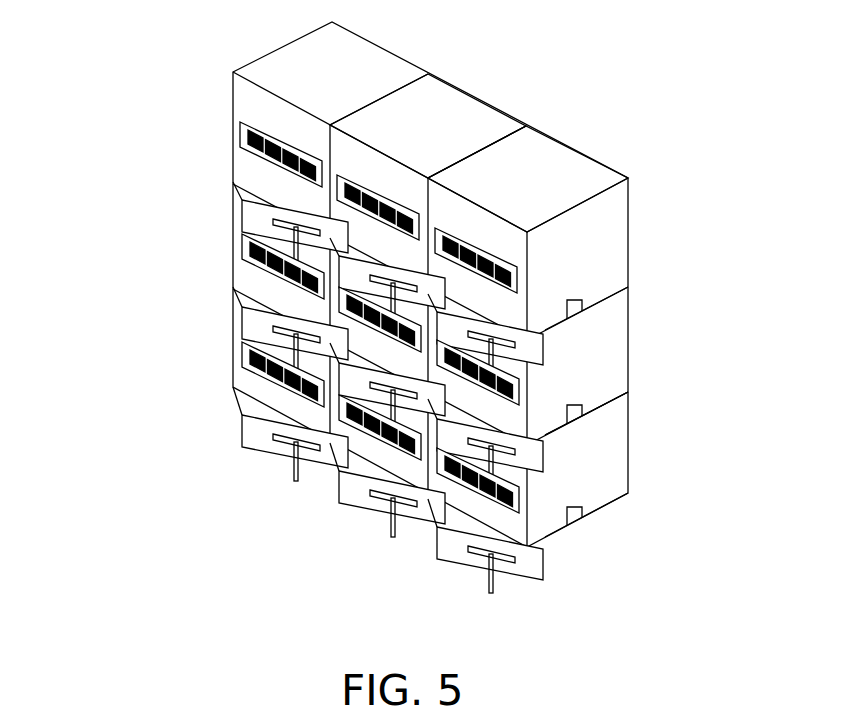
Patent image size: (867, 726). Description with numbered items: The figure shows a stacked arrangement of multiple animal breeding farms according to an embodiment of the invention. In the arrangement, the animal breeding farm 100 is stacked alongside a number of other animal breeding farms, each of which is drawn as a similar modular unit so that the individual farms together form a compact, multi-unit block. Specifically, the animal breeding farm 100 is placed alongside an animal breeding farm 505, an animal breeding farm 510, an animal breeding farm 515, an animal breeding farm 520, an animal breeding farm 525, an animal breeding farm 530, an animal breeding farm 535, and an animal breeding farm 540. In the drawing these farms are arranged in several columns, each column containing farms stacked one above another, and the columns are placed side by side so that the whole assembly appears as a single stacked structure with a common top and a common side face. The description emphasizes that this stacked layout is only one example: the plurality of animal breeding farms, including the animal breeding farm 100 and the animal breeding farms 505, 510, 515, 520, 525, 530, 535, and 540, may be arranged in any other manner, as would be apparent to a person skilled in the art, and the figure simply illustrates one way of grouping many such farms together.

The animal breeding farm 100 is at (243, 90).
The animal breeding farm 505 is at (473, 123).
The animal breeding farm 510 is at (572, 178).
The animal breeding farm 515 is at (240, 240).
The animal breeding farm 520 is at (383, 358).
The animal breeding farm 525 is at (600, 360).
The animal breeding farm 530 is at (240, 338).
The animal breeding farm 535 is at (387, 469).
The animal breeding farm 540 is at (598, 483).